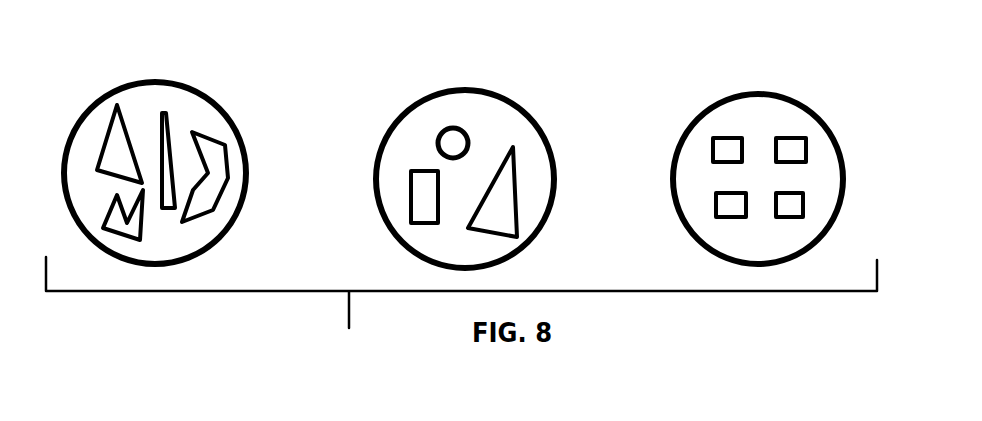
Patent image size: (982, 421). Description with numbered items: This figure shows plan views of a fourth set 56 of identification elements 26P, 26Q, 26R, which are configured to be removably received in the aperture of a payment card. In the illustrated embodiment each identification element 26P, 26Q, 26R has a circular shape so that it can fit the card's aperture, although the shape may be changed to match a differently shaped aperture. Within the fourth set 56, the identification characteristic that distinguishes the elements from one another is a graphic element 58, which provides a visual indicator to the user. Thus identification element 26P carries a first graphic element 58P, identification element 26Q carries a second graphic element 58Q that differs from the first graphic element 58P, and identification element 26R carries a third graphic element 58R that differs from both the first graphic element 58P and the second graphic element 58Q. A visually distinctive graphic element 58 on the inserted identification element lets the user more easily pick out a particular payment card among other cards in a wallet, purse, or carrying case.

The graphic element 58 is at (141, 98).
The first graphic element 58P is at (212, 157).
The second graphic element 58Q is at (502, 192).
The third graphic element 58R is at (798, 150).
The identification element 26P is at (220, 79).
The identification element 26Q is at (516, 84).
The identification element 26R is at (810, 90).
The fourth set 56 is at (685, 317).